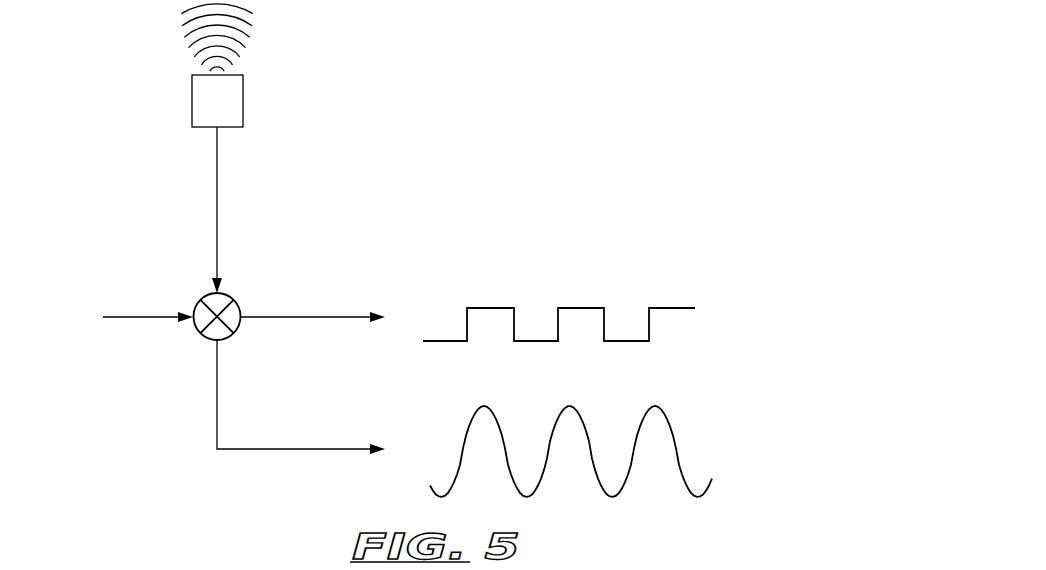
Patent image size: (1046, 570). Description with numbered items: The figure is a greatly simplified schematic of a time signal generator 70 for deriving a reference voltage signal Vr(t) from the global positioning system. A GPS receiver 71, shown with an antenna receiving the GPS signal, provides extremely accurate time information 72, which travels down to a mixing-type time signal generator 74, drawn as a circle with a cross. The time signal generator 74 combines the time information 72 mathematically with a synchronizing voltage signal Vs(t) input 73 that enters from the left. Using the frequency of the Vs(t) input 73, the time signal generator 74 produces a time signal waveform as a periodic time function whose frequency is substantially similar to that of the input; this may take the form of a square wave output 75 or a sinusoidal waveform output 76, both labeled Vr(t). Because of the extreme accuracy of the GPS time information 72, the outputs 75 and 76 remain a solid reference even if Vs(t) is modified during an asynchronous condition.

The time signal generator 70 is at (573, 77).
The GPS receiver 71 is at (192, 97).
The time information 72 is at (217, 201).
The synchronizing voltage signal input 73 is at (66, 344).
The time signal generator 74 is at (240, 306).
The square wave output 75 is at (293, 318).
The sinusoidal waveform output 76 is at (297, 452).